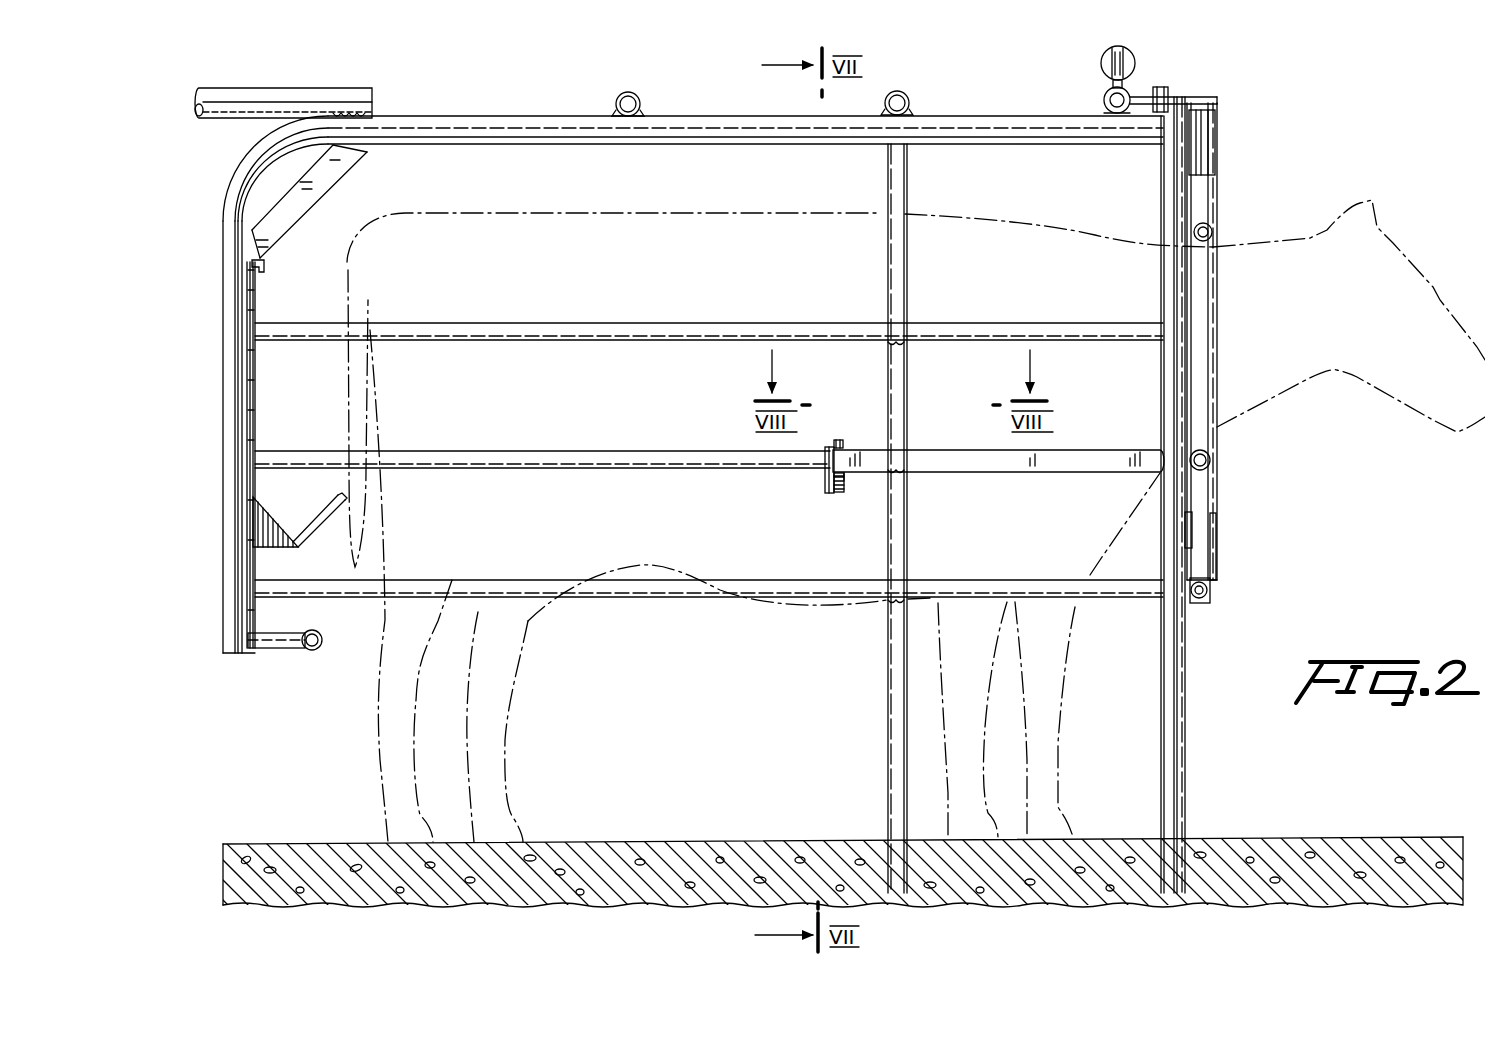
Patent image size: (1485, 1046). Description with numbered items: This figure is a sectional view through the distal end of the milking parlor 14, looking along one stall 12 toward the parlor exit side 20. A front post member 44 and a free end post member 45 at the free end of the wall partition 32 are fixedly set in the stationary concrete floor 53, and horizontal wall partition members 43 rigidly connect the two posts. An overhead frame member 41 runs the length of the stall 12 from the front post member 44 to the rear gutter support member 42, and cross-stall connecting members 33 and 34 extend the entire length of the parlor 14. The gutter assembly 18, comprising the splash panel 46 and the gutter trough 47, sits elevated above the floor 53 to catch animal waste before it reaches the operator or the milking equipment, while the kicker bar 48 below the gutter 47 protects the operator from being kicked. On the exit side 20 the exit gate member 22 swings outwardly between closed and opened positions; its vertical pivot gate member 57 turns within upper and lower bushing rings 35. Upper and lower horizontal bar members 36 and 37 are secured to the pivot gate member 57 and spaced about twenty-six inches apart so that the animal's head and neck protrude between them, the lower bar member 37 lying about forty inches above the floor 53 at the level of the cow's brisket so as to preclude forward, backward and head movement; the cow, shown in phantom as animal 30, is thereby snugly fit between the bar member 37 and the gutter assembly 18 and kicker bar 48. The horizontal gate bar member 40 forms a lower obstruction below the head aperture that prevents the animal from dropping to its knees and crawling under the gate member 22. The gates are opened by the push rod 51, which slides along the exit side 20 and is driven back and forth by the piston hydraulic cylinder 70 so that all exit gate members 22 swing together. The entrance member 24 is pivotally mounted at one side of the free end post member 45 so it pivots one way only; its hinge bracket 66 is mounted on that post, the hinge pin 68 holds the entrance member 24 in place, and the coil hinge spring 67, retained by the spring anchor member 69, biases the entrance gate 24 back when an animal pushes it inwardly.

The stall 12 is at (228, 190).
The parlor 14 is at (350, 63).
The gutter assembly 18 is at (262, 426).
The parlor exit side 20 is at (1236, 548).
The exit gate member 22 is at (1214, 197).
The entrance member 24 is at (822, 462).
The animal 30 is at (709, 701).
The wall partition 32 is at (886, 655).
The cross-stall connecting member 33 is at (908, 94).
The cross-stall connecting member 34 is at (620, 95).
The exit gate bushing ring 35 is at (1200, 160).
The upper horizontal bar member 36 is at (1212, 233).
The lower horizontal bar member 37 is at (1211, 459).
The horizontal gate bar member 40 is at (1211, 591).
The overhead frame member 41 is at (725, 114).
The rear gutter support member 42 is at (232, 302).
The horizontal wall partition member 43 is at (1005, 326).
The front post member 44 is at (1186, 680).
The free end post member 45 is at (892, 548).
The splash panel 46 is at (256, 374).
The gutter trough 47 is at (318, 540).
The kicker bar 48 is at (306, 664).
The push rod 51 is at (1104, 99).
The concrete floor 53 is at (665, 865).
The vertical pivot gate member 57 is at (1200, 124).
The hinge bracket 66 is at (829, 493).
The coil hinge spring 67 is at (842, 490).
The hinge pin 68 is at (840, 438).
The spring anchor member 69 is at (845, 478).
The piston hydraulic cylinder 70 is at (1103, 58).